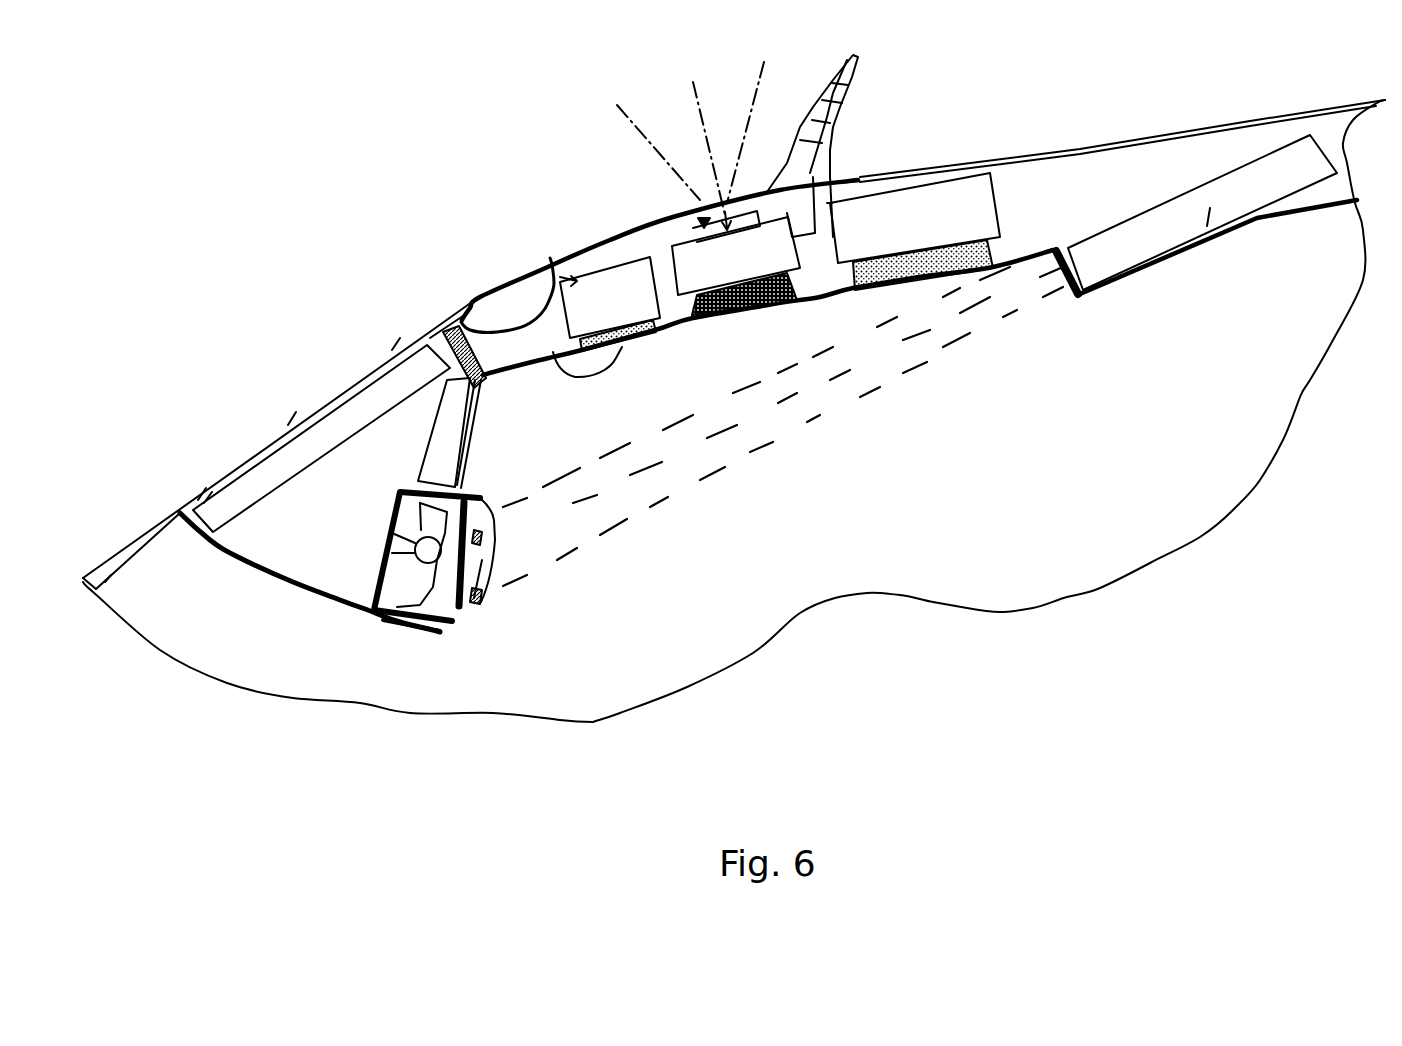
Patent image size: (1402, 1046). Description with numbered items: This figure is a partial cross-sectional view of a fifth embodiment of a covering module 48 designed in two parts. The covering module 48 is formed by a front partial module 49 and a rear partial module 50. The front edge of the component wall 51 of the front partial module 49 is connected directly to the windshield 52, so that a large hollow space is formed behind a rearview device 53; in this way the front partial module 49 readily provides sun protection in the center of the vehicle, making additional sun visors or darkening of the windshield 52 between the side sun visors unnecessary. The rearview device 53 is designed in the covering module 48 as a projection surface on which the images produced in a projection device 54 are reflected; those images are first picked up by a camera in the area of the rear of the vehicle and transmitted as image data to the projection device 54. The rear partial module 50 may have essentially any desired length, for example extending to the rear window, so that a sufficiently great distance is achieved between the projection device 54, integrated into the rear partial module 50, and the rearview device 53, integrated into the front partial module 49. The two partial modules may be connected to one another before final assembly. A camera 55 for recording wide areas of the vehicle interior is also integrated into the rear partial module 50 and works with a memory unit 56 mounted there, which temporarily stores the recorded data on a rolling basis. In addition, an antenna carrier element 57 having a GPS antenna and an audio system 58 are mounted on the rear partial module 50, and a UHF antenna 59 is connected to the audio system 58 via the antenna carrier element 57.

The covering module 48 is at (1012, 492).
The front partial module 49 is at (300, 617).
The rear partial module 50 is at (1101, 345).
The component wall 51 is at (237, 557).
The windshield 52 is at (330, 394).
The rearview device 53 is at (481, 603).
The projection device 54 is at (1222, 242).
The camera 55 is at (598, 373).
The memory unit 56 is at (637, 321).
The antenna carrier element 57 is at (757, 280).
The audio system 58 is at (937, 245).
The UHF antenna 59 is at (833, 135).